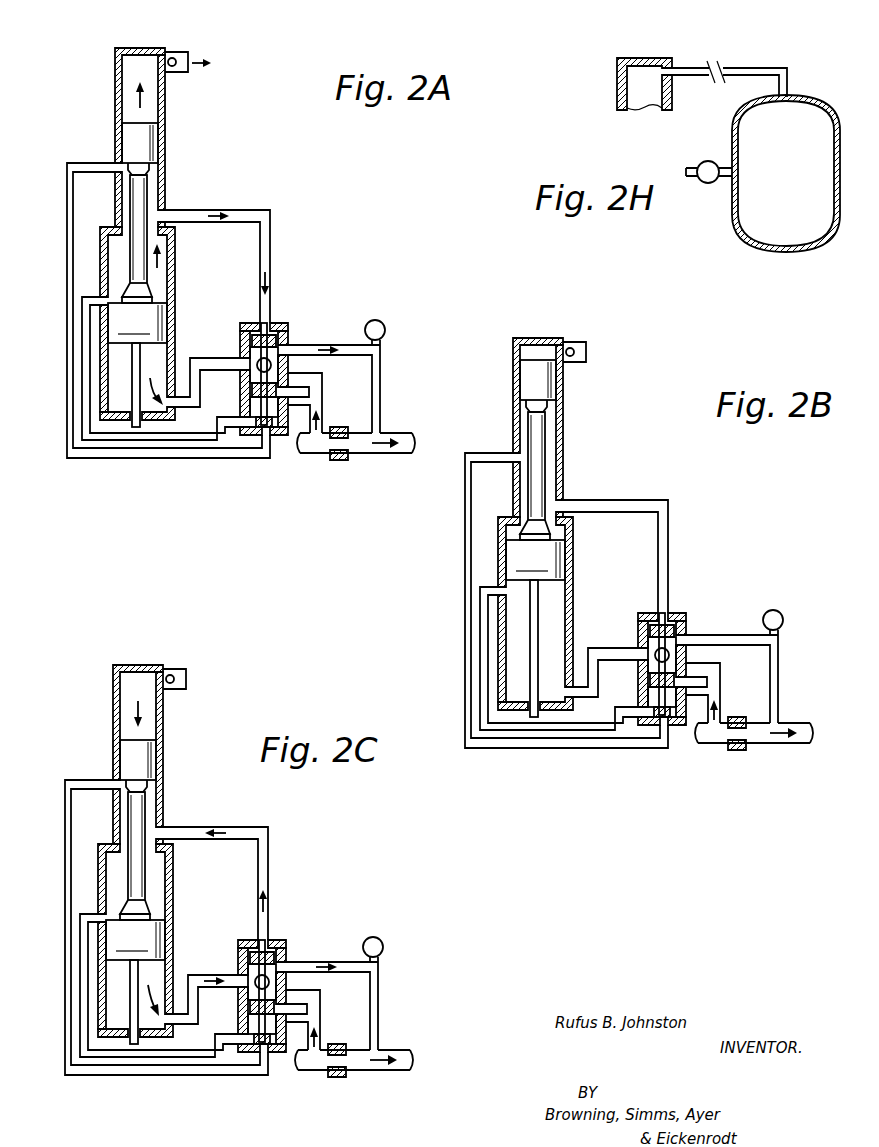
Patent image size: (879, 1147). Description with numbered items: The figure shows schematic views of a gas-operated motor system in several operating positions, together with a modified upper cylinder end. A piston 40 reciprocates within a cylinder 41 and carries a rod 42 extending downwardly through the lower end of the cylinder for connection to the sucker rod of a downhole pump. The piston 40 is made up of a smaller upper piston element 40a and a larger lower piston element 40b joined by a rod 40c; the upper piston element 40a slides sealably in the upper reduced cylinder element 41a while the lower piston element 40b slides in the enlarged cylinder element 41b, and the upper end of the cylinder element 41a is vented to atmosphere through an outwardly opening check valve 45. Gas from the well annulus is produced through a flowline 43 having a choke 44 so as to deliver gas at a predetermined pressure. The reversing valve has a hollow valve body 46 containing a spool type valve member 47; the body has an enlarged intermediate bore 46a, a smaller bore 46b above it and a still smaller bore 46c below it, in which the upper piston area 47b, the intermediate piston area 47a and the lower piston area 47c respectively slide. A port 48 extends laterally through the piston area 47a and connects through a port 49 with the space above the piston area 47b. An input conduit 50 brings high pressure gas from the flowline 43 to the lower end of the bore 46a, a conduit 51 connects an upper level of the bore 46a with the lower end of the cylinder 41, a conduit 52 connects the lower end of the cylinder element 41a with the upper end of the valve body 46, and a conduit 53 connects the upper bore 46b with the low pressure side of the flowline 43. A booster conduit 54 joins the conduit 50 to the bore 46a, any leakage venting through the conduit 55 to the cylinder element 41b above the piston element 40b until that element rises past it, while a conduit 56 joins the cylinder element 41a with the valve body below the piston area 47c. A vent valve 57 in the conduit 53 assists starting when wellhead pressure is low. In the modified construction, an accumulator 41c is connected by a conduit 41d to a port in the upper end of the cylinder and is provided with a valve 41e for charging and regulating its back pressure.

In FIG. 2A, the piston 40 is at (139, 266).
In FIG. 2B, the piston 40 is at (536, 538).
In FIG. 2C, the piston 40 is at (134, 885).
In FIG. 2A, the upper piston element 40a is at (150, 128).
In FIG. 2B, the upper piston element 40a is at (592, 380).
In FIG. 2C, the upper piston element 40a is at (173, 753).
In FIG. 2A, the lower piston element 40b is at (137, 323).
In FIG. 2B, the lower piston element 40b is at (535, 560).
In FIG. 2C, the lower piston element 40b is at (135, 940).
In FIG. 2A, the rod 40c is at (145, 200).
In FIG. 2B, the rod 40c is at (592, 470).
In FIG. 2C, the rod 40c is at (176, 850).
In FIG. 2A, the cylinder 41 is at (145, 212).
In FIG. 2B, the cylinder 41 is at (581, 498).
In FIG. 2C, the cylinder 41 is at (171, 824).
In FIG. 2A, the upper reduced cylinder element 41a is at (115, 60).
In FIG. 2B, the upper reduced cylinder element 41a is at (589, 427).
In FIG. 2C, the upper reduced cylinder element 41a is at (167, 754).
In FIG. 2H, the upper reduced cylinder element 41a is at (617, 88).
In FIG. 2A, the enlarged cylinder element 41b is at (178, 270).
In FIG. 2B, the enlarged cylinder element 41b is at (573, 613).
In FIG. 2C, the enlarged cylinder element 41b is at (171, 940).
In FIG. 2H, the accumulator 41c is at (736, 222).
In FIG. 2H, the conduit 41d is at (790, 82).
In FIG. 2H, the valve 41e is at (705, 160).
In FIG. 2A, the rod 42 is at (131, 362).
In FIG. 2B, the rod 42 is at (473, 648).
In FIG. 2C, the rod 42 is at (87, 1000).
In FIG. 2A, the flowline 43 is at (408, 455).
In FIG. 2B, the flowline 43 is at (766, 742).
In FIG. 2C, the flowline 43 is at (365, 1053).
In FIG. 2A, the choke 44 is at (341, 461).
In FIG. 2B, the choke 44 is at (757, 746).
In FIG. 2C, the choke 44 is at (350, 1077).
In FIG. 2A, the check valve 45 is at (172, 57).
In FIG. 2B, the check valve 45 is at (581, 324).
In FIG. 2C, the check valve 45 is at (174, 650).
In FIG. 2A, the valve body 46 is at (266, 400).
In FIG. 2B, the valve body 46 is at (667, 672).
In FIG. 2C, the valve body 46 is at (263, 1009).
In FIG. 2A, the enlarged bore 46a is at (247, 392).
In FIG. 2B, the enlarged bore 46a is at (640, 670).
In FIG. 2C, the enlarged bore 46a is at (262, 1007).
In FIG. 2A, the smaller bore 46b is at (247, 343).
In FIG. 2B, the smaller bore 46b is at (647, 606).
In FIG. 2C, the smaller bore 46b is at (243, 929).
In FIG. 2A, the still smaller bore 46c is at (289, 432).
In FIG. 2B, the still smaller bore 46c is at (682, 749).
In FIG. 2C, the still smaller bore 46c is at (264, 1084).
In FIG. 2A, the spool type valve member 47 is at (290, 370).
In FIG. 2B, the spool type valve member 47 is at (662, 655).
In FIG. 2C, the spool type valve member 47 is at (262, 982).
In FIG. 2A, the piston area 47a is at (247, 410).
In FIG. 2B, the piston area 47a is at (641, 692).
In FIG. 2C, the piston area 47a is at (262, 1024).
In FIG. 2A, the piston area 47b is at (247, 358).
In FIG. 2B, the piston area 47b is at (641, 649).
In FIG. 2C, the piston area 47b is at (239, 973).
In FIG. 2A, the piston area 47c is at (268, 436).
In FIG. 2B, the piston area 47c is at (662, 712).
In FIG. 2C, the piston area 47c is at (237, 1018).
In FIG. 2A, the port 48 is at (305, 393).
In FIG. 2B, the port 48 is at (724, 680).
In FIG. 2C, the port 48 is at (324, 1006).
In FIG. 2A, the port 49 is at (280, 323).
In FIG. 2B, the port 49 is at (675, 591).
In FIG. 2C, the port 49 is at (270, 921).
In FIG. 2A, the input conduit 50 is at (322, 383).
In FIG. 2B, the input conduit 50 is at (724, 687).
In FIG. 2C, the input conduit 50 is at (324, 1014).
In FIG. 2A, the conduit 51 is at (190, 372).
In FIG. 2B, the conduit 51 is at (605, 645).
In FIG. 2C, the conduit 51 is at (193, 971).
In FIG. 2A, the third conduit 52 is at (272, 250).
In FIG. 2B, the third conduit 52 is at (646, 555).
In FIG. 2C, the third conduit 52 is at (240, 883).
In FIG. 2A, the fourth conduit 53 is at (382, 350).
In FIG. 2B, the fourth conduit 53 is at (764, 676).
In FIG. 2C, the fourth conduit 53 is at (360, 1003).
In FIG. 2A, the booster conduit 54 is at (310, 406).
In FIG. 2B, the booster conduit 54 is at (724, 707).
In FIG. 2C, the booster conduit 54 is at (325, 1033).
In FIG. 2A, the conduit 55 is at (82, 308).
In FIG. 2B, the conduit 55 is at (523, 658).
In FIG. 2C, the conduit 55 is at (137, 978).
In FIG. 2A, the conduit 56 is at (68, 175).
In FIG. 2B, the conduit 56 is at (566, 576).
In FIG. 2C, the conduit 56 is at (156, 903).
In FIG. 2A, the vent valve 57 is at (384, 322).
In FIG. 2B, the vent valve 57 is at (791, 608).
In FIG. 2C, the vent valve 57 is at (389, 932).